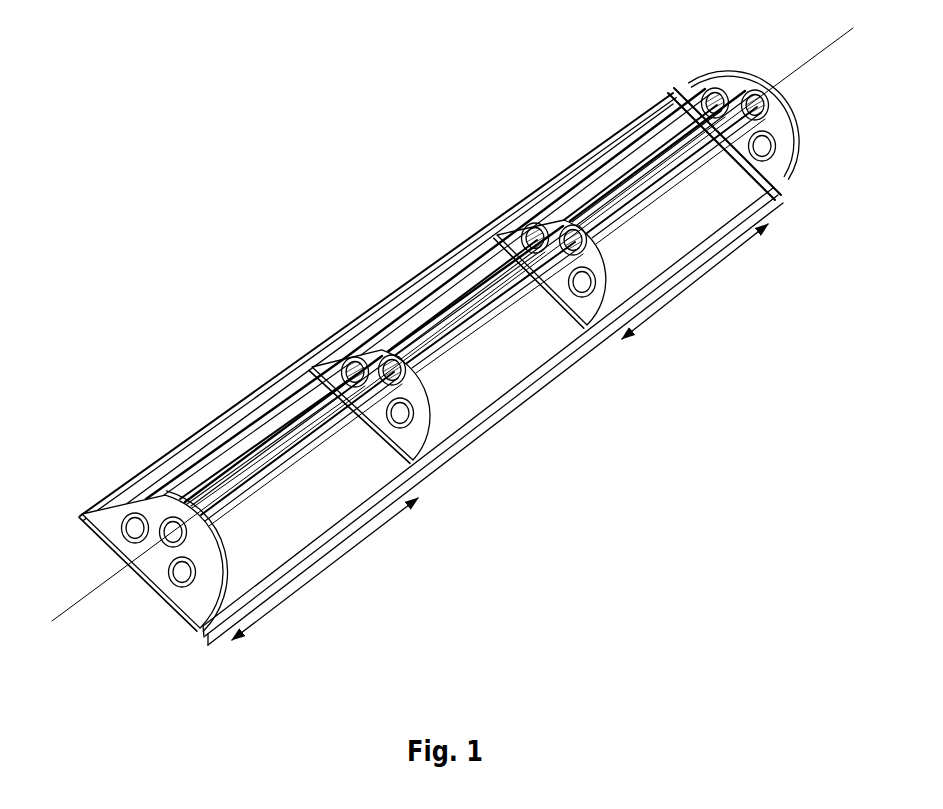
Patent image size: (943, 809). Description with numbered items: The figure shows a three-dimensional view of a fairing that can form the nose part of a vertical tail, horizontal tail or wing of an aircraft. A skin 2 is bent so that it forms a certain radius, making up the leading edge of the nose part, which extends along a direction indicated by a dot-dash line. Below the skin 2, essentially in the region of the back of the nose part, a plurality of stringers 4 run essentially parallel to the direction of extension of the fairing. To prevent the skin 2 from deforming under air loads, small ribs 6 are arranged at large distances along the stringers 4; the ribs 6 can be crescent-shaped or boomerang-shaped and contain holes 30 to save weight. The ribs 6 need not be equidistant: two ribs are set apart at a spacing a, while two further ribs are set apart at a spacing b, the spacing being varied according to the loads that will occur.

The skin 2 is at (318, 510).
The stringers 4 is at (487, 340).
The ribs 6 is at (594, 308).
The holes 30 is at (430, 408).
The spacing a is at (325, 569).
The spacing b is at (695, 281).